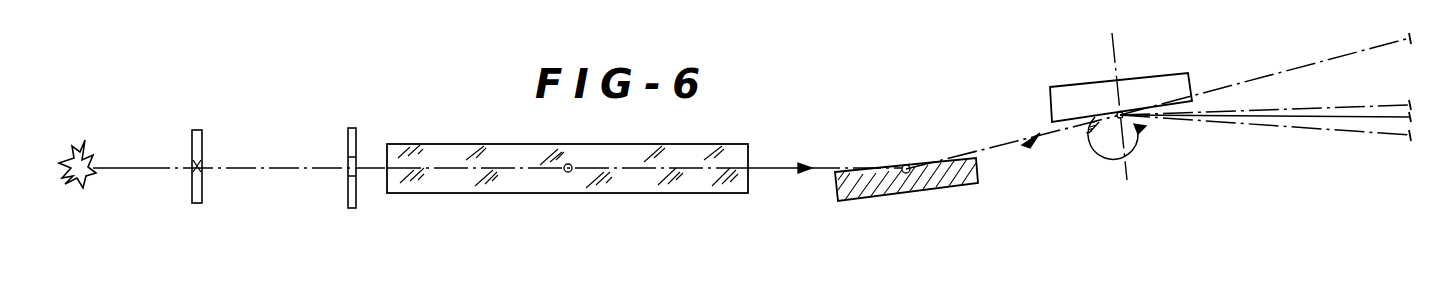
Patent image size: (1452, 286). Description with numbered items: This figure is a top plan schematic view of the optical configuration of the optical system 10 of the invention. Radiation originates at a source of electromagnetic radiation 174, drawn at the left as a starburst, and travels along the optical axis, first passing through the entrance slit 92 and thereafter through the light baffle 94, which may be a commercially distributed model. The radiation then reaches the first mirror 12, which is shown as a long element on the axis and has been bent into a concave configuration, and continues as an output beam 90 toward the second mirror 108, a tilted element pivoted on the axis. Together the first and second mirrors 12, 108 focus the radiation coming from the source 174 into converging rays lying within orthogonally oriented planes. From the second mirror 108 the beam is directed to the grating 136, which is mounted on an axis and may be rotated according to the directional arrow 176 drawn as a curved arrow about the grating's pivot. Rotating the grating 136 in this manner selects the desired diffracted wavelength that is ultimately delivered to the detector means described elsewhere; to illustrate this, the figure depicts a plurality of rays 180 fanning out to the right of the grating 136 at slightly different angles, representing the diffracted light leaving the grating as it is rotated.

The source of electromagnetic radiation 174 is at (88, 144).
The entrance slit 92 is at (202, 146).
The light baffle 94 is at (348, 130).
The first mirror 12 is at (608, 145).
The output beam 90 is at (770, 170).
The second mirror 108 is at (918, 192).
The optical system 10 is at (1020, 179).
The grating 136 is at (1046, 88).
The directional arrow 176 is at (1135, 91).
The plurality of rays 180 is at (1376, 88).